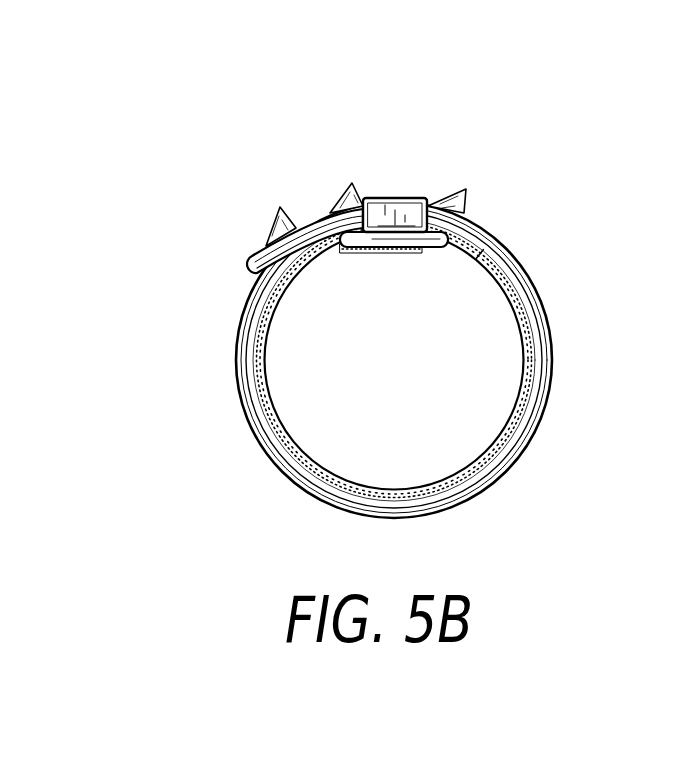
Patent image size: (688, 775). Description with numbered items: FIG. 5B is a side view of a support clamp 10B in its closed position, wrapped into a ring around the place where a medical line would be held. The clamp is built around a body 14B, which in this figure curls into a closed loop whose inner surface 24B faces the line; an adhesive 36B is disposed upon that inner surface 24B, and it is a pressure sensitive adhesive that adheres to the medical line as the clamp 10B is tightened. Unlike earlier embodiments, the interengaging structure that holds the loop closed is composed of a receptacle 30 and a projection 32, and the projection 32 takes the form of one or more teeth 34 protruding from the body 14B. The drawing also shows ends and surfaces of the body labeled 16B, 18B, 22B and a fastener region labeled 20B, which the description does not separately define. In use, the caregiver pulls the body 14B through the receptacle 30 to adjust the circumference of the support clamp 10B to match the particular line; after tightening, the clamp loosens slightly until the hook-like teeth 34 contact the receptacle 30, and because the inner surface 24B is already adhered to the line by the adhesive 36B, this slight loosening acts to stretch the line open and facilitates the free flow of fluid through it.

The support clamp 10B is at (342, 281).
The body 14B is at (400, 360).
The first end of band 16B is at (440, 248).
The second end of band 18B is at (250, 250).
The fastener assembly 20B is at (454, 215).
The outer surface of band 22B is at (237, 372).
The inner surface 24B is at (267, 412).
The receptacle 30 is at (398, 197).
The projection 32 is at (303, 208).
The teeth 34 is at (352, 182).
The adhesive 36B is at (521, 452).